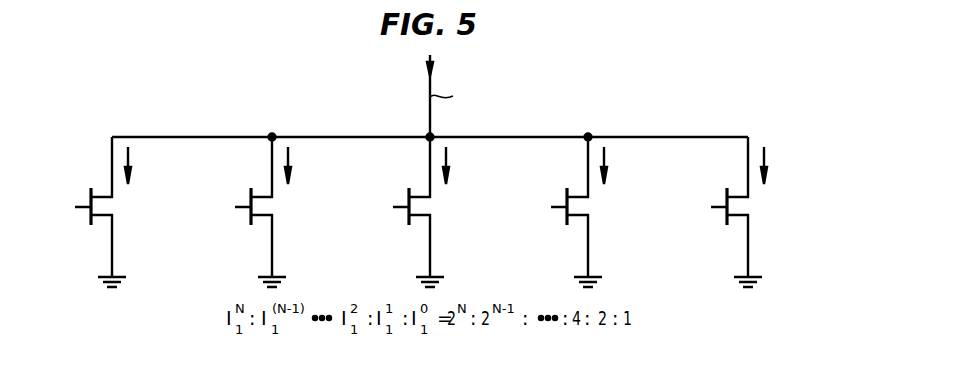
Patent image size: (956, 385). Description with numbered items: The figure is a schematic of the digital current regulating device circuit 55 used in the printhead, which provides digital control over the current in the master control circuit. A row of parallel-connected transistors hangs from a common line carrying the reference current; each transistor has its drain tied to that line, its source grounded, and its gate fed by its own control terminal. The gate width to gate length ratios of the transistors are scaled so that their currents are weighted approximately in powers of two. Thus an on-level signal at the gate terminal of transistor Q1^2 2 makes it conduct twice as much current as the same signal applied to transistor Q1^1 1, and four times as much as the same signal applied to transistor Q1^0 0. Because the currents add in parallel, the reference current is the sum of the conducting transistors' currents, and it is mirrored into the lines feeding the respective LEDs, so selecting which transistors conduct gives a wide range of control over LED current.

The digital current regulating device circuit 55 is at (132, 100).
The transistor Q1^ 2 is at (428, 212).
The transistor Q1^ 1 is at (586, 212).
The transistor Q1^ 0 is at (746, 212).